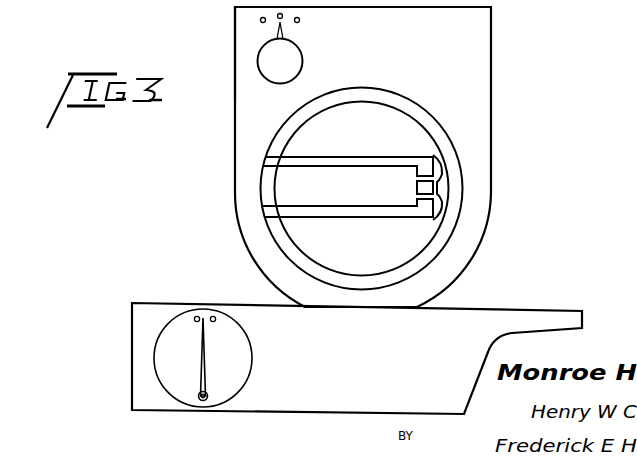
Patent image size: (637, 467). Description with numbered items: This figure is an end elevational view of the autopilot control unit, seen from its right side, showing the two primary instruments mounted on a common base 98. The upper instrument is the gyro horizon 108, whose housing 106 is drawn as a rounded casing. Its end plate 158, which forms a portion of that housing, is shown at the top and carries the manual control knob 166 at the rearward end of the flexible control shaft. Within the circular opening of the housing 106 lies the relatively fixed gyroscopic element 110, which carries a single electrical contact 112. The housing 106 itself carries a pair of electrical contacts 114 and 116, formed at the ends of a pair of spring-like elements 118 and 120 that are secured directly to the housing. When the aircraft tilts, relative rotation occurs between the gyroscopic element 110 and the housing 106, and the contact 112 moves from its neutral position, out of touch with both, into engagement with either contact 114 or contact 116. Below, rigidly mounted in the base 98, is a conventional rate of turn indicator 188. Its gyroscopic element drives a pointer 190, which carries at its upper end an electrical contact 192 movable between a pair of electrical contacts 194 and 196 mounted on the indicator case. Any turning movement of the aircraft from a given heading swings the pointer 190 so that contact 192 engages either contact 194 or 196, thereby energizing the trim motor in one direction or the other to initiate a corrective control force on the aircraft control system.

The base 98 is at (497, 317).
The housing 106 is at (261, 165).
The gyro horizon 108 is at (425, 106).
The gyroscopic element 110 is at (368, 112).
The electrical contact 112 is at (430, 188).
The electrical contact 114 is at (432, 163).
The electrical contact 116 is at (427, 215).
The spring-like element 118 is at (335, 145).
The spring-like element 120 is at (335, 212).
The end plate 158 is at (240, 49).
The manual control knob 166 is at (288, 60).
The rate of turn indicator 188 is at (242, 367).
The pointer 190 is at (200, 385).
The electrical contact 192 is at (206, 307).
The electrical contact 194 is at (192, 322).
The electrical contact 196 is at (218, 319).